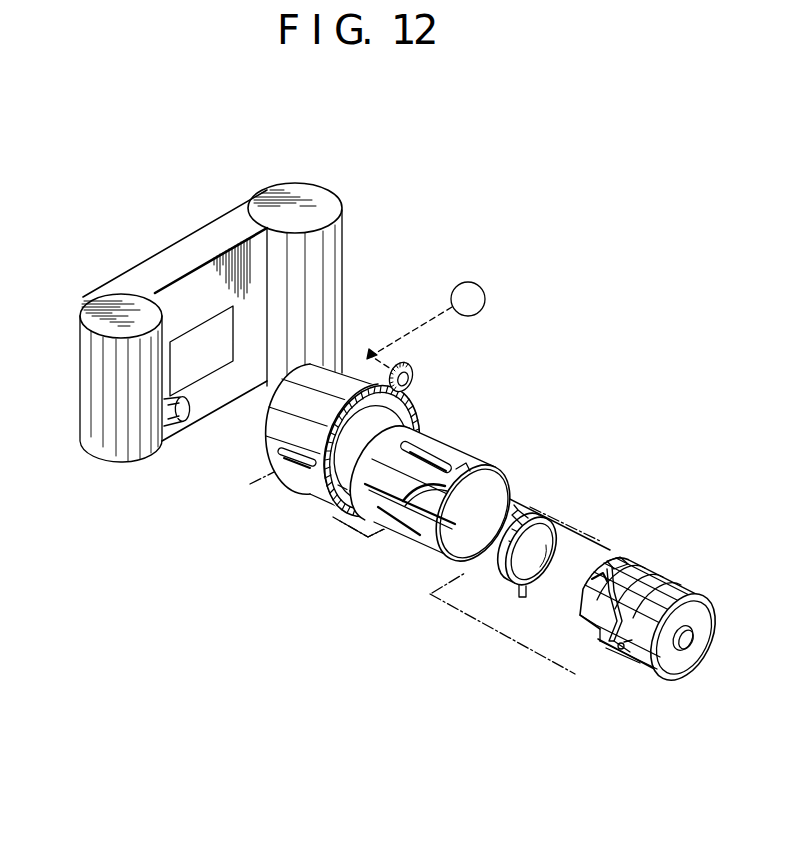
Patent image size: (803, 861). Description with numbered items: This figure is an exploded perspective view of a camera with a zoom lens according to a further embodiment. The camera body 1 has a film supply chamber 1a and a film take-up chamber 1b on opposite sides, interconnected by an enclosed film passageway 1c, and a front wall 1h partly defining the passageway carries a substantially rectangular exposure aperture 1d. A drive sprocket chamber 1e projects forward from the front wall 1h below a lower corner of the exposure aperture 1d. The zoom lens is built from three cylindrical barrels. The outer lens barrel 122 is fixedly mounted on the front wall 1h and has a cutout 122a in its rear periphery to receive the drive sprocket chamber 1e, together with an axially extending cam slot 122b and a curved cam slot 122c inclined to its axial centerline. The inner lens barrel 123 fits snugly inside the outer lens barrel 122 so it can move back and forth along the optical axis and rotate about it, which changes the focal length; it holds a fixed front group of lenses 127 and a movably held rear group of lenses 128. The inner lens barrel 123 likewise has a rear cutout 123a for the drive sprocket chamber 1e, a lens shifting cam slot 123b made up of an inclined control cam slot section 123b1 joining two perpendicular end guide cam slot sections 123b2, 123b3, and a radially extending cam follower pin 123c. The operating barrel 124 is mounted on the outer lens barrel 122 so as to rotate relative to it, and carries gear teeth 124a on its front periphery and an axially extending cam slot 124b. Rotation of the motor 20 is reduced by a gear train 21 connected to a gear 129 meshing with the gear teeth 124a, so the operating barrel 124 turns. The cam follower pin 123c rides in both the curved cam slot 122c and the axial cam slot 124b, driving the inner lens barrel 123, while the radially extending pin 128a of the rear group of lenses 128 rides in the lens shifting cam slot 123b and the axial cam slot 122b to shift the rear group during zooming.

The camera body 1 is at (202, 322).
The film supply chamber 1a is at (330, 200).
The film take-up chamber 1b is at (88, 379).
The film passageway 1c is at (237, 217).
The exposure aperture 1d is at (205, 377).
The drive sprocket chamber 1e is at (173, 425).
The front wall 1h is at (233, 300).
The motor 20 is at (486, 298).
The gear train 21 is at (418, 330).
The outer lens barrel 122 is at (440, 499).
The cutout 122a is at (378, 510).
The axially extending cam slot 122b is at (463, 457).
The curved cam slot 122c is at (423, 506).
The inner lens barrel 123 is at (636, 610).
The cutout 123a is at (590, 632).
The lens shifting cam slot 123b is at (584, 575).
The control cam slot section 123b1 is at (623, 570).
The end guide cam slot section 123b2 is at (616, 558).
The end guide cam slot section 123b3 is at (667, 587).
The cam follower pin 123c is at (630, 668).
The operating barrel 124 is at (333, 426).
The gear teeth 124a is at (335, 502).
The axially extending cam slot 124b is at (293, 475).
The front group of lenses 127 is at (680, 650).
The rear group of lenses 128 is at (541, 543).
The radially extending pin 128a is at (517, 504).
The gear 129 is at (409, 366).